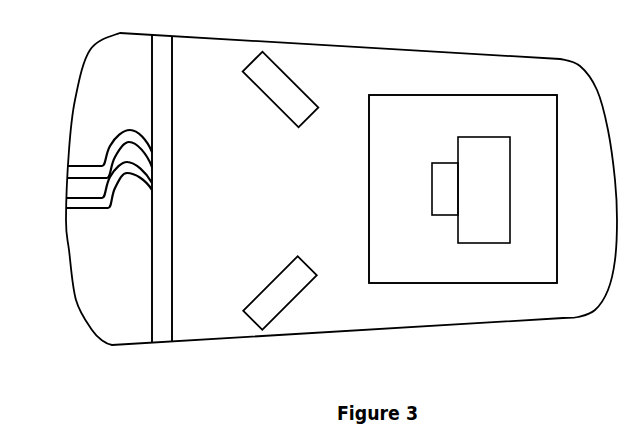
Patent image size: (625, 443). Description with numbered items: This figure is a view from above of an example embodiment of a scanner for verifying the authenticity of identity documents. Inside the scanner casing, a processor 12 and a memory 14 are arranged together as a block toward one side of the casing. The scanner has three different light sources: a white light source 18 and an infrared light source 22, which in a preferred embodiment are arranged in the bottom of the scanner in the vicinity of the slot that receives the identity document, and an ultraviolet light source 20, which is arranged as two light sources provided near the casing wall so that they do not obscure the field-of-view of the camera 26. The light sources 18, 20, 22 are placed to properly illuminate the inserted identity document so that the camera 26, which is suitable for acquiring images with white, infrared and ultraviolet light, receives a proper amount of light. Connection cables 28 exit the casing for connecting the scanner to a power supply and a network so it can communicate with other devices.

The processor 12 is at (463, 189).
The memory 14 is at (463, 189).
The white light source 18 is at (161, 318).
The ultraviolet light source 20 is at (281, 191).
The infrared light source 22 is at (162, 189).
The camera 26 is at (471, 190).
The connection cables 28 is at (74, 171).